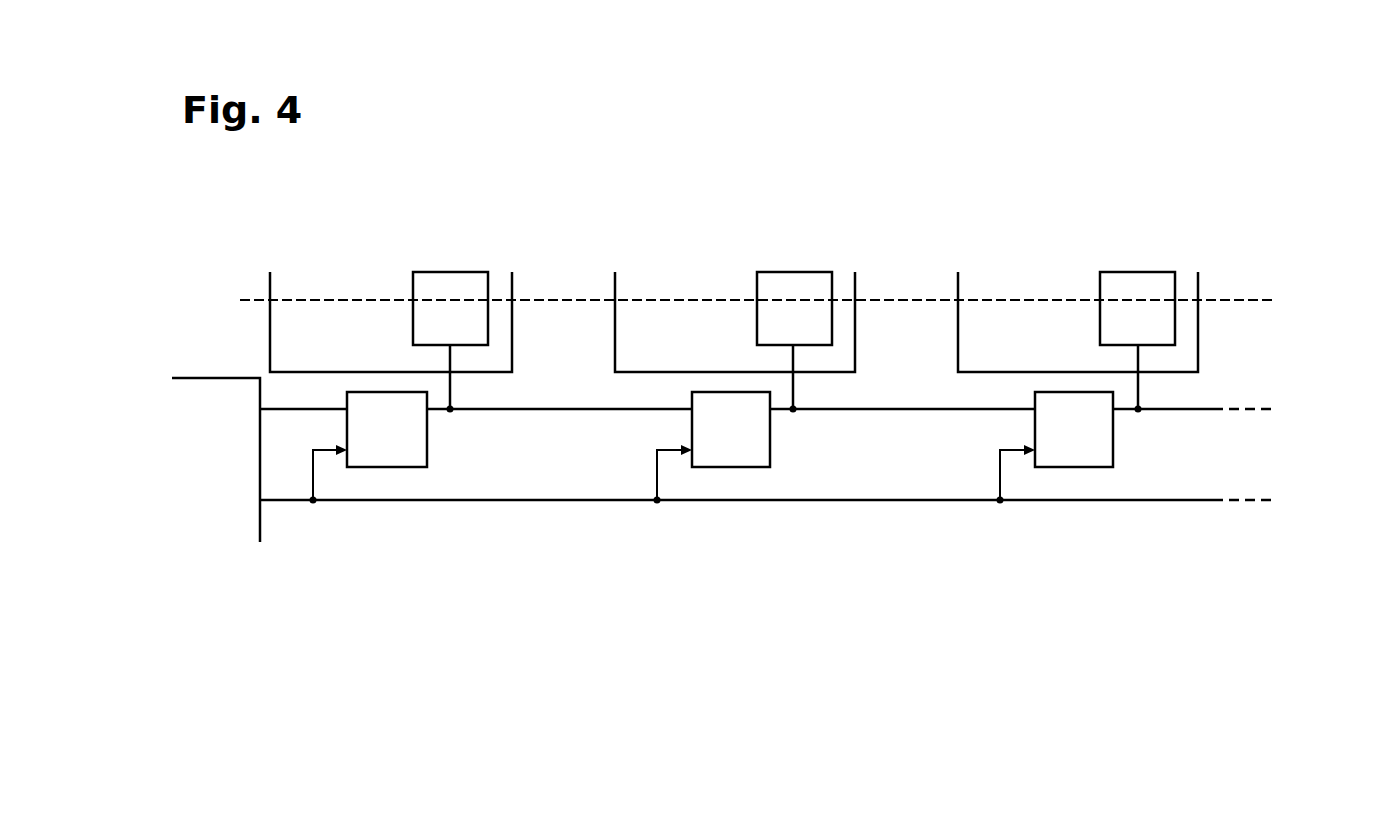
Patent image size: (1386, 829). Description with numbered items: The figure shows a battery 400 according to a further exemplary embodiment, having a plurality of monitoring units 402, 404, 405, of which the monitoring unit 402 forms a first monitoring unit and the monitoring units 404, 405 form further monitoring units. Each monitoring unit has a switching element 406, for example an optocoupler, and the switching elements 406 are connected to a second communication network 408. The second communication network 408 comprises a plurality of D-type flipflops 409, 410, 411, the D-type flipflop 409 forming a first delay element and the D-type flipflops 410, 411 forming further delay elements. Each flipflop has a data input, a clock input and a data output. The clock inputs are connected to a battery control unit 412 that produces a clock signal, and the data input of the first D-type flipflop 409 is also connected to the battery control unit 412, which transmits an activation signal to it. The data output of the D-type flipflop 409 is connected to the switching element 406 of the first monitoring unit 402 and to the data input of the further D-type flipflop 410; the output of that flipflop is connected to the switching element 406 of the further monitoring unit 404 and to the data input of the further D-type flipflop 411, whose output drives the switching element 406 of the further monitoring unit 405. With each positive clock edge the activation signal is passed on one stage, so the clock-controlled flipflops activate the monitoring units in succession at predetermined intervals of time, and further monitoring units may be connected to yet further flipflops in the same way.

The battery 400 is at (1268, 250).
The first monitoring unit 402 is at (512, 363).
The further monitoring unit 404 is at (855, 363).
The further monitoring unit 405 is at (1198, 363).
The switching element 406 is at (448, 272).
The second communication network 408 is at (1280, 468).
The D-type flipflop 409 is at (427, 450).
The D-type flipflop 410 is at (770, 450).
The D-type flipflop 411 is at (1113, 450).
The battery control unit 412 is at (193, 377).